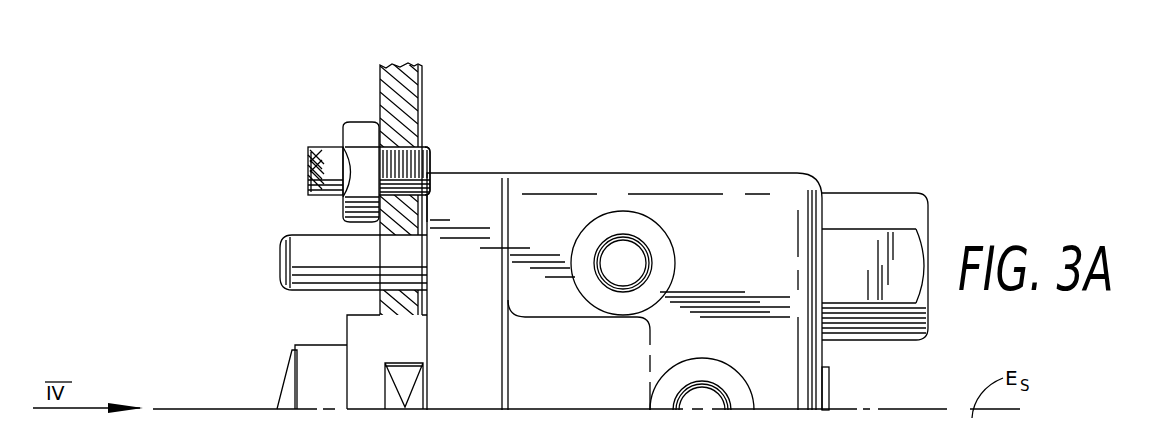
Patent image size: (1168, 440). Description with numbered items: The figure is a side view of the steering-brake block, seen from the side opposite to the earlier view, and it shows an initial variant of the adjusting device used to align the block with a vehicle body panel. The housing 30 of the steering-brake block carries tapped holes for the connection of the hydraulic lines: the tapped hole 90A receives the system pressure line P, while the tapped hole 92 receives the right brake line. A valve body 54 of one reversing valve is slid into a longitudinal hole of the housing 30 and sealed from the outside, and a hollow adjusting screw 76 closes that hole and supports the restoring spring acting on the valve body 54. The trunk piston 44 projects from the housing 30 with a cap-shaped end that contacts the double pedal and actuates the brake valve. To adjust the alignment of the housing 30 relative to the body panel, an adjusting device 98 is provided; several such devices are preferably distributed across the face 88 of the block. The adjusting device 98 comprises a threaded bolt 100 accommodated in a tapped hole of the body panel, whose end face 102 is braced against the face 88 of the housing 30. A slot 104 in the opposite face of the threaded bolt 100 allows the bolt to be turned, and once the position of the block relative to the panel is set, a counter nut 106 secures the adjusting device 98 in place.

The steering-brake block housing 30 is at (767, 218).
The trunk piston 44 is at (288, 384).
The valve body 54 is at (298, 260).
The hollow adjusting screw 76 is at (910, 210).
The face 88 is at (428, 207).
The tapped hole 90A is at (713, 391).
The tapped hole 92 is at (623, 247).
The adjusting device 98 is at (325, 144).
The threaded bolt 100 is at (404, 154).
The end face 102 is at (431, 153).
The slot 104 is at (309, 172).
The counter nut 106 is at (356, 136).